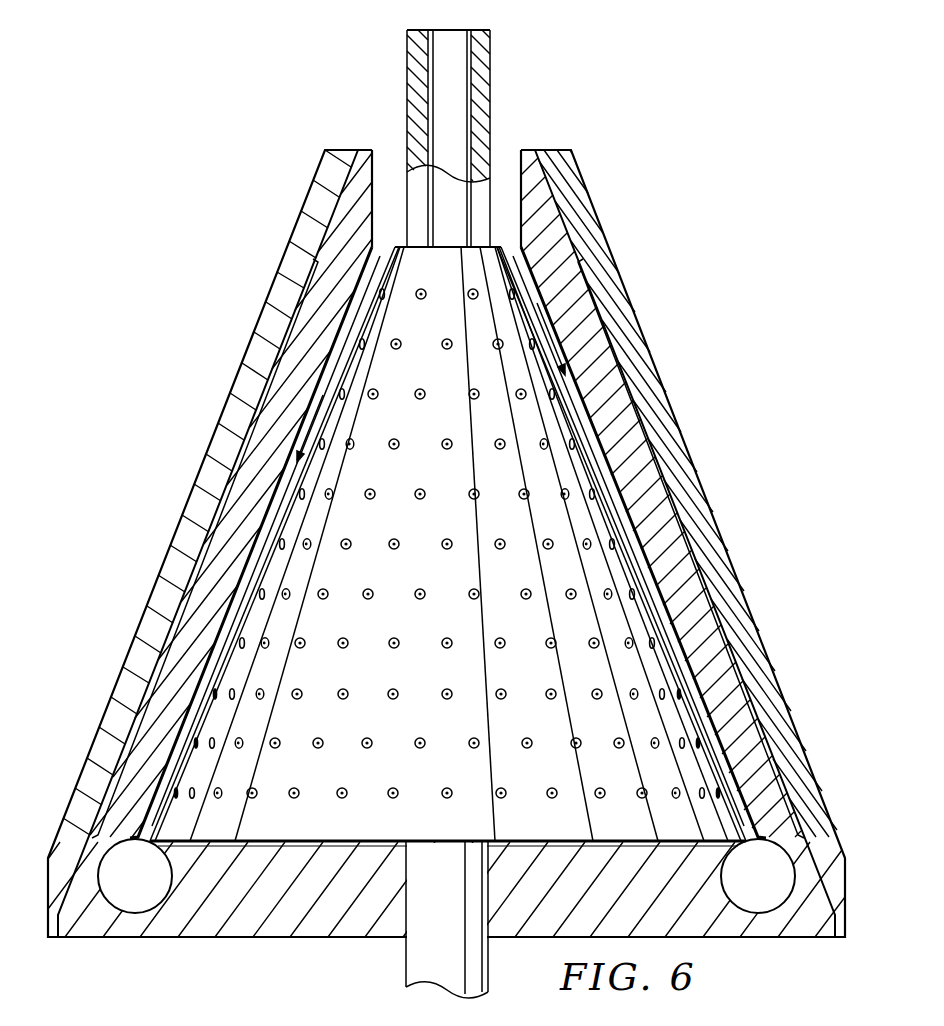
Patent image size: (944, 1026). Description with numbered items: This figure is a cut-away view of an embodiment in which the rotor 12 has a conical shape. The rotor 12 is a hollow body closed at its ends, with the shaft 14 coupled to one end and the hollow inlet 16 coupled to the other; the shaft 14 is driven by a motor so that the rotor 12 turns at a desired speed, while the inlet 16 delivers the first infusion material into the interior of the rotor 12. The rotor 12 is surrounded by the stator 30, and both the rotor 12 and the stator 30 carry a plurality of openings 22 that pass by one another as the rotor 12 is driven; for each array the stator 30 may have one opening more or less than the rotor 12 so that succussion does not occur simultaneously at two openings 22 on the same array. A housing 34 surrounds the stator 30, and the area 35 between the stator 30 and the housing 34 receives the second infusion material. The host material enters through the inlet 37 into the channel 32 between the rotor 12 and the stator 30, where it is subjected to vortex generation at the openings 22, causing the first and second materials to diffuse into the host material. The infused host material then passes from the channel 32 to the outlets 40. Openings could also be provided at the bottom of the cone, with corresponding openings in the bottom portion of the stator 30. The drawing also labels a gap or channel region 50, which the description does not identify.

The rotor 12 is at (401, 246).
The shaft 14 is at (492, 70).
The inlet 16 is at (406, 960).
The openings 22 is at (427, 292).
The stator 30 is at (598, 358).
The channel 32 is at (178, 714).
The housing 34 is at (270, 303).
The area 35 is at (237, 458).
The inlet 37 is at (388, 143).
The outlet 40 is at (148, 888).
The annular channel 50 is at (588, 438).